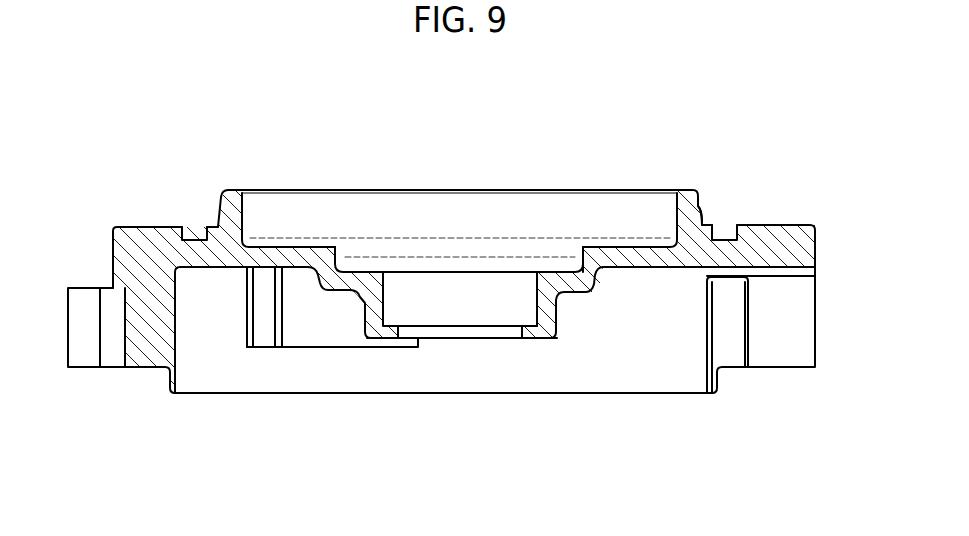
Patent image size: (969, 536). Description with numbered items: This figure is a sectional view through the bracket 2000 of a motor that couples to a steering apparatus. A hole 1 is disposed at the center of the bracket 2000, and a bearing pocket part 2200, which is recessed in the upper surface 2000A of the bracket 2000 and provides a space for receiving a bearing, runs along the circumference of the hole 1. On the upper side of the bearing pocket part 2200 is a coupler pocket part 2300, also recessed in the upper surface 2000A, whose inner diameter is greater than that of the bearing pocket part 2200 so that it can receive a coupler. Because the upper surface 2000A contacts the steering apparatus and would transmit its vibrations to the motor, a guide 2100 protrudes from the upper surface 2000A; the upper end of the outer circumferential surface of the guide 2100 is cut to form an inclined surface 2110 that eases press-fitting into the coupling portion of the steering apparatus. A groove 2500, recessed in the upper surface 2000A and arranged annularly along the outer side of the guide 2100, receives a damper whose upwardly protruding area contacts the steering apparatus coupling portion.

The bracket 2000 is at (810, 220).
The upper surface 2000A is at (140, 226).
The groove 2500 is at (188, 226).
The guide 2100 is at (705, 218).
The inclined surface 2110 is at (697, 188).
The bearing pocket part 2200 is at (530, 287).
The coupler pocket part 2300 is at (575, 268).
The hole 1 is at (467, 332).